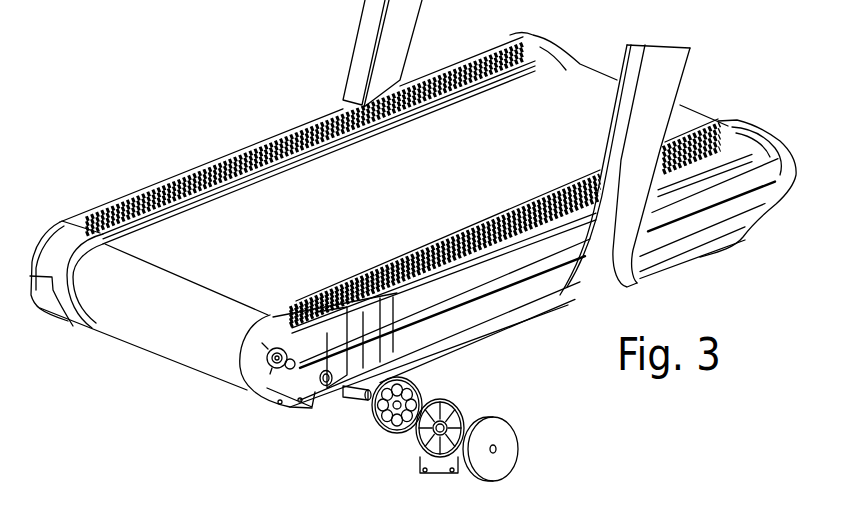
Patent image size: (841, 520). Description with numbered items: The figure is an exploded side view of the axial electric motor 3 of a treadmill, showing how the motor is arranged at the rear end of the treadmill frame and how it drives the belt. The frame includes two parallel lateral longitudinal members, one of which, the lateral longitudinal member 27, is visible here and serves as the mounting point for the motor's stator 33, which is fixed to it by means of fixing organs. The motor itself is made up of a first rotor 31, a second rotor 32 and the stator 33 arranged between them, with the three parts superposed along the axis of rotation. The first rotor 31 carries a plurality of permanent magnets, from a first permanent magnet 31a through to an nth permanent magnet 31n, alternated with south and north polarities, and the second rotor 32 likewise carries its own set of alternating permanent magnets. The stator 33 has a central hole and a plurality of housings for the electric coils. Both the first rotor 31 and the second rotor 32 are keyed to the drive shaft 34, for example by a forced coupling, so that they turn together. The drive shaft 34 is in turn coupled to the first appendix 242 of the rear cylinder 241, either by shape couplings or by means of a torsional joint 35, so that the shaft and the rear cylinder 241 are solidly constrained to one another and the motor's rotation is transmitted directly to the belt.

The axial electric motor 3 is at (413, 253).
The lateral longitudinal member 27 is at (527, 297).
The rear cylinder 241 is at (125, 309).
The first appendix 242 is at (280, 377).
The first rotor 31 is at (478, 426).
The permanent magnet 31a is at (397, 432).
The permanent magnet 31n is at (485, 419).
The second rotor 32 is at (507, 457).
The stator 33 is at (460, 405).
The drive shaft 34 is at (358, 397).
The torsional joint 35 is at (325, 382).